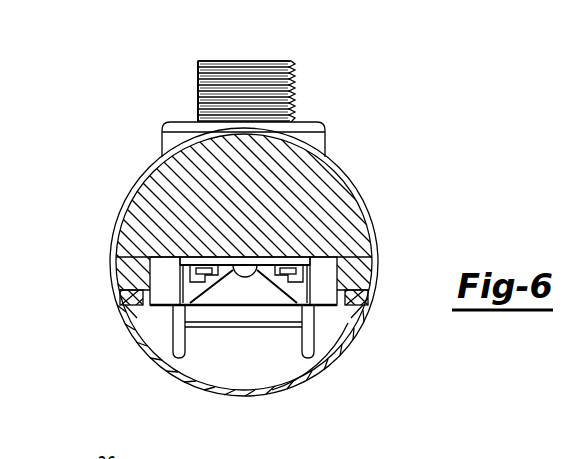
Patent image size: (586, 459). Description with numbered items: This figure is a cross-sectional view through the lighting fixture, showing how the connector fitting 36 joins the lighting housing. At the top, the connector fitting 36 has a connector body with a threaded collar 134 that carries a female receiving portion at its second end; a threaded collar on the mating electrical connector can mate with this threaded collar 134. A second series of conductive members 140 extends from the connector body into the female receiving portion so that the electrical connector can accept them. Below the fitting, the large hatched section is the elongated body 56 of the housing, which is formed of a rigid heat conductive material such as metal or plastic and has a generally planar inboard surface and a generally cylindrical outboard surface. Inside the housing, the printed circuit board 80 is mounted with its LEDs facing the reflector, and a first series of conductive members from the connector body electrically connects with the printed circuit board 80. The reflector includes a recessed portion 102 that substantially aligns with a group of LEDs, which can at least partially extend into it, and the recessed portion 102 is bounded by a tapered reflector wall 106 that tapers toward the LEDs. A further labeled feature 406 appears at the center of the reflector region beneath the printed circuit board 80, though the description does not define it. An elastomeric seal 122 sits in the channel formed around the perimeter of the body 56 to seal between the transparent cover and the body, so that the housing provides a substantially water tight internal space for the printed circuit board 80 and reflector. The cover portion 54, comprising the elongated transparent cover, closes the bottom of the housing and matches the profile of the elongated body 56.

The connector fitting 36 is at (297, 82).
The threaded collar 134 is at (206, 91).
The elongated body 56 is at (347, 199).
The cover portion 54 is at (168, 366).
The printed circuit board 80 is at (337, 257).
The button 406 is at (243, 278).
The recessed portion 102 is at (215, 298).
The tapered reflector wall 106 is at (264, 276).
The elastomeric seal 122 is at (122, 293).
The second series of conductive members 140 is at (20, 458).